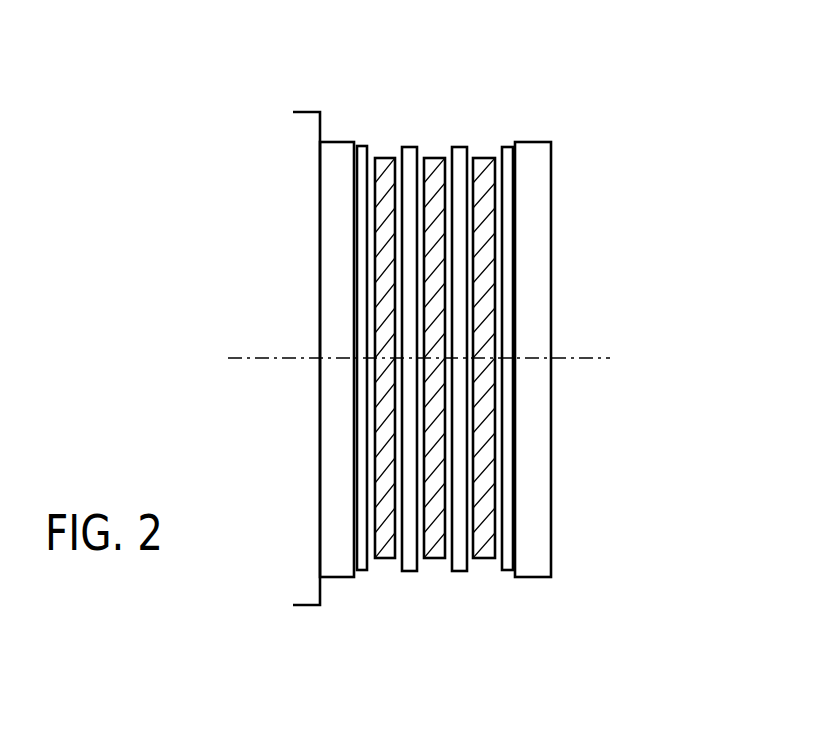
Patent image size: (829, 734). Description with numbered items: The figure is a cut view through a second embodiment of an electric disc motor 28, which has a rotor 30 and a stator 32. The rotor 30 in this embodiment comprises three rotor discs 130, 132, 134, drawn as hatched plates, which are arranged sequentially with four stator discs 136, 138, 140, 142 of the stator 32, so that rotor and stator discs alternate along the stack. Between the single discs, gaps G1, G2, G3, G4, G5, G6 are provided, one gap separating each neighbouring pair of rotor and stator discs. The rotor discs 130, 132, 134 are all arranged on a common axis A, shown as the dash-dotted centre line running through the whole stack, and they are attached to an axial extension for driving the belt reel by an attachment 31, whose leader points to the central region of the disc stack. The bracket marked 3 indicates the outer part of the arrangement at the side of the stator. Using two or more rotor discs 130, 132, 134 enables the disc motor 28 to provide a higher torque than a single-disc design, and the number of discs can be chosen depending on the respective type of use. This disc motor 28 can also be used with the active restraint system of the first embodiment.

The housing / measuring device 3 is at (276, 567).
The electric disc motor 28 is at (624, 105).
The rotor 30 is at (463, 79).
The attachment 31 is at (372, 360).
The stator 32 is at (566, 503).
The rotor disc 130 is at (387, 137).
The rotor disc 132 is at (436, 137).
The rotor disc 134 is at (485, 137).
The stator disc 136 is at (342, 591).
The stator disc 138 is at (409, 585).
The stator disc 140 is at (460, 585).
The stator disc 142 is at (537, 591).
The common axis A is at (256, 366).
The gap G1 is at (357, 235).
The gap G2 is at (389, 289).
The gap G3 is at (405, 319).
The gap G4 is at (461, 231).
The gap G5 is at (483, 261).
The gap G6 is at (511, 315).